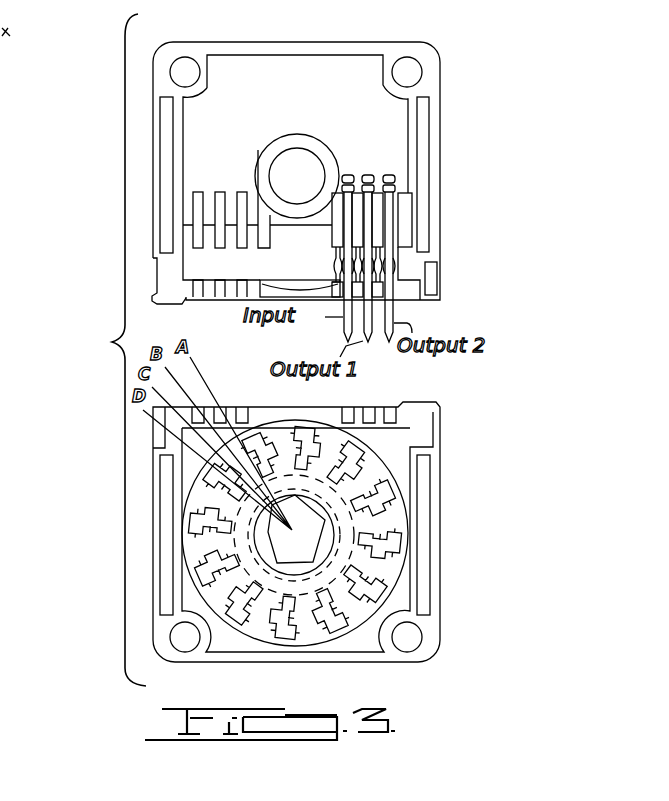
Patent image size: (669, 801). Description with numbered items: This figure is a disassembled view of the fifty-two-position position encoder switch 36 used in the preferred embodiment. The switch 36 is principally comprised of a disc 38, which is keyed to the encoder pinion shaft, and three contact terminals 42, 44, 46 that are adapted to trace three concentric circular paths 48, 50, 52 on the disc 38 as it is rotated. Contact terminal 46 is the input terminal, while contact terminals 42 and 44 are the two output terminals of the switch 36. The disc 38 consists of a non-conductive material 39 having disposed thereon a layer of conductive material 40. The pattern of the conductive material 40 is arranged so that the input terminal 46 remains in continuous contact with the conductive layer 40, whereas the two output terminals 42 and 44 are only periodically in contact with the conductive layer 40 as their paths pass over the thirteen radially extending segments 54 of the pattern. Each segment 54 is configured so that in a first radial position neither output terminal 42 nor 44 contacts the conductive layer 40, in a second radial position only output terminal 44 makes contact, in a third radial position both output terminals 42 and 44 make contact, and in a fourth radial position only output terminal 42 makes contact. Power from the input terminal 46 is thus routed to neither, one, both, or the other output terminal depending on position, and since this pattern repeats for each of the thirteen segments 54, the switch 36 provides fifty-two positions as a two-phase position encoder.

The encoder switch 36 is at (455, 58).
The disc 38 is at (200, 473).
The non-conductive material 39 is at (200, 485).
The conductive material 40 is at (294, 535).
The output terminal 42 is at (389, 174).
The output terminal 44 is at (368, 174).
The input terminal 46 is at (347, 174).
The circular path 48 is at (187, 587).
The circular path 50 is at (187, 558).
The circular path 52 is at (187, 525).
The radially extending segment 54 is at (297, 640).